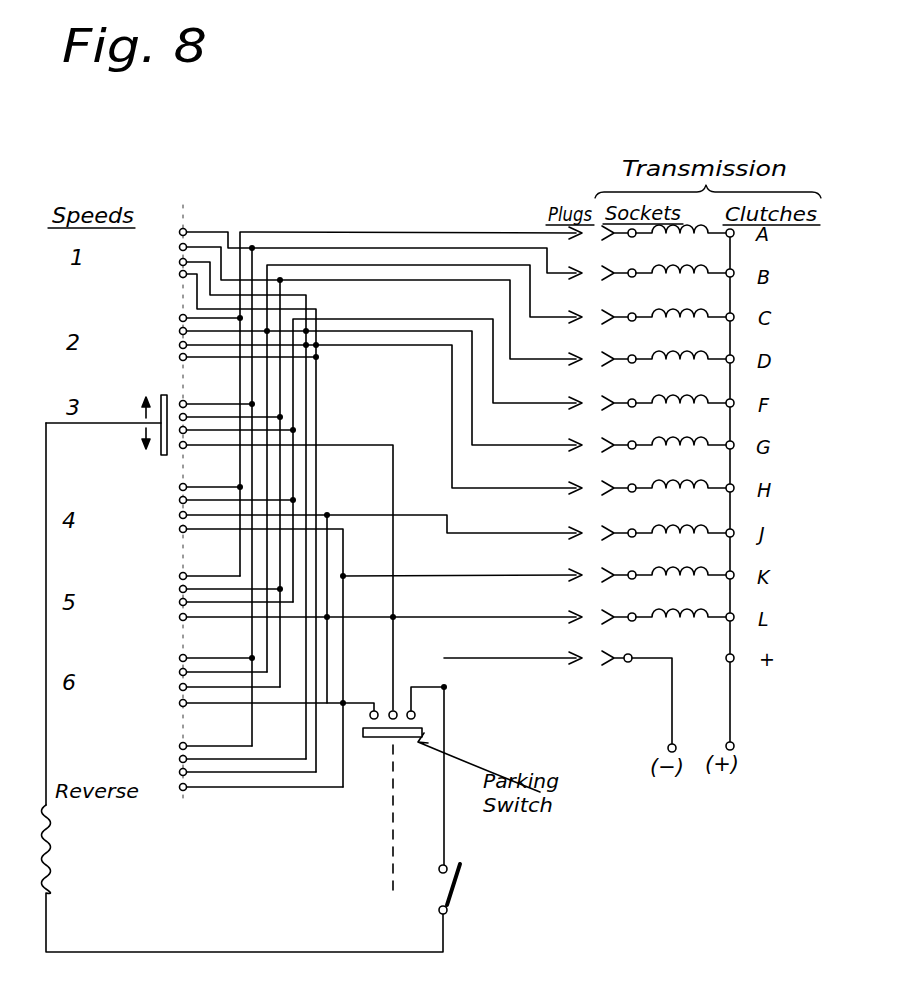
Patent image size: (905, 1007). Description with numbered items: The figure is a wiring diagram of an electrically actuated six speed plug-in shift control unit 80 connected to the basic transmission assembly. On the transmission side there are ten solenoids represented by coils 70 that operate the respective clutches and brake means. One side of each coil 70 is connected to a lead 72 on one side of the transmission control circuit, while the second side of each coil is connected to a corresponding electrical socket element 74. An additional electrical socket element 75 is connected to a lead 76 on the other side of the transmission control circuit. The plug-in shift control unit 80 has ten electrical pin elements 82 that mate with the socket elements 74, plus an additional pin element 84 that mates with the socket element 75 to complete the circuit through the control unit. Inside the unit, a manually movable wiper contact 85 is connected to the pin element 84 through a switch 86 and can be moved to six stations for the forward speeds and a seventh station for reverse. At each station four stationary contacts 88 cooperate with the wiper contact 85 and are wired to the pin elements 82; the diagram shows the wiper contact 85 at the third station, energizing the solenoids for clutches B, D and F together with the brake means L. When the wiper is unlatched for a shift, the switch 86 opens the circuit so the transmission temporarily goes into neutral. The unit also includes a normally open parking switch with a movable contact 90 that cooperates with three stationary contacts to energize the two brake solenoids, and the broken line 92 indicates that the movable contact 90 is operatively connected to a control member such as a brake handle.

The coils 70 is at (703, 240).
The lead 72 is at (730, 707).
The electrical socket element 74 is at (605, 283).
The additional electrical socket element 75 is at (606, 664).
The lead 76 is at (672, 722).
The plug-in shift control unit 80 is at (560, 197).
The electrical pin elements 82 is at (572, 276).
The additional pin element 84 is at (577, 664).
The manually movable wiper contact 85 is at (165, 457).
The switch 86 is at (458, 887).
The stationary contacts 88 is at (176, 787).
The movable contact 90 is at (424, 732).
The broken line 92 is at (394, 851).